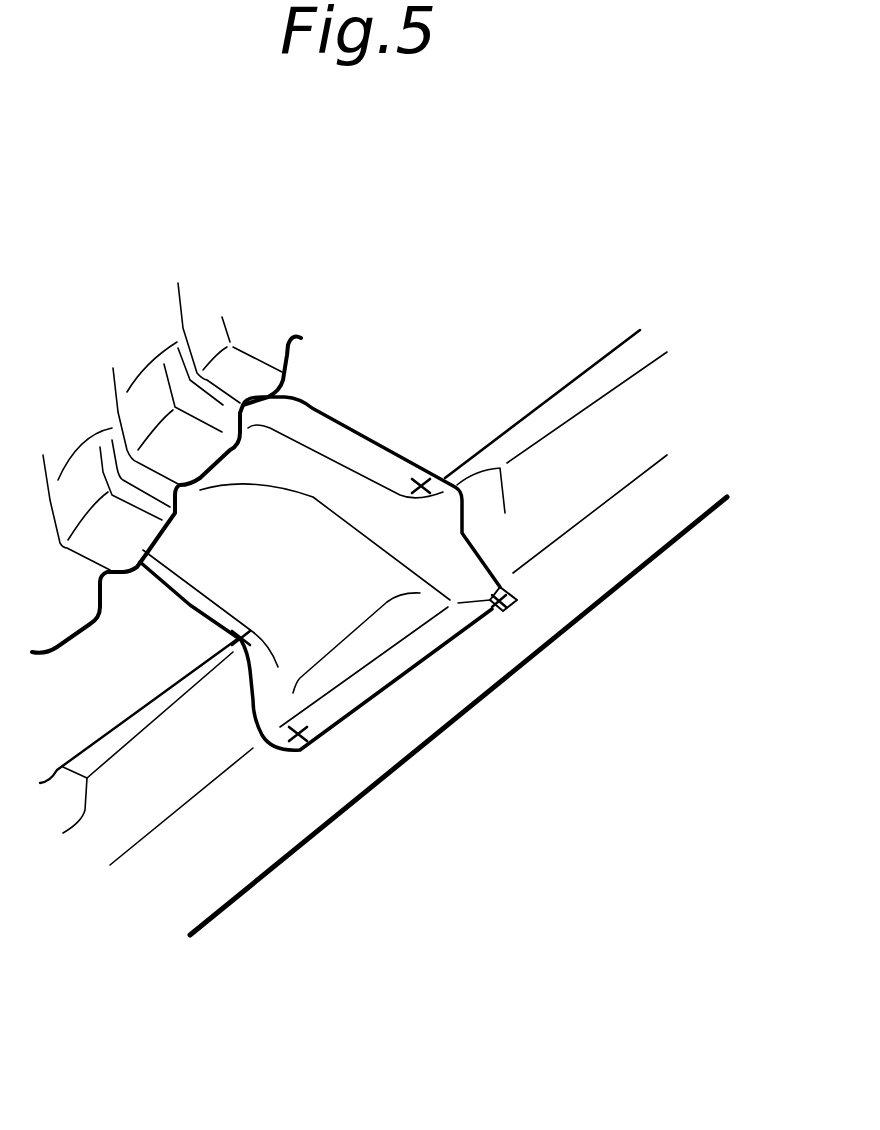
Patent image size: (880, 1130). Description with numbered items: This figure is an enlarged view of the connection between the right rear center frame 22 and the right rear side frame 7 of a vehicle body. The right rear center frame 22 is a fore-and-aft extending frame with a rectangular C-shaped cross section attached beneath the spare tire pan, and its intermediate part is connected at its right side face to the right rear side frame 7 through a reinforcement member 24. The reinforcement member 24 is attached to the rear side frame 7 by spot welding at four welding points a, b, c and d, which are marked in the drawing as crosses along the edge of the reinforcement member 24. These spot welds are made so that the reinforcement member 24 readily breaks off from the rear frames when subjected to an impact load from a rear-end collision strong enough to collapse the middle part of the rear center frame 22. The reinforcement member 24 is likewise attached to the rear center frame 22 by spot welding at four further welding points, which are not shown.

The right rear center frame 22 is at (203, 308).
The reinforcement member 24 is at (322, 473).
The right rear side frame 7 is at (620, 547).
The welding point a is at (419, 478).
The welding point b is at (500, 610).
The welding point c is at (298, 757).
The welding point d is at (237, 657).